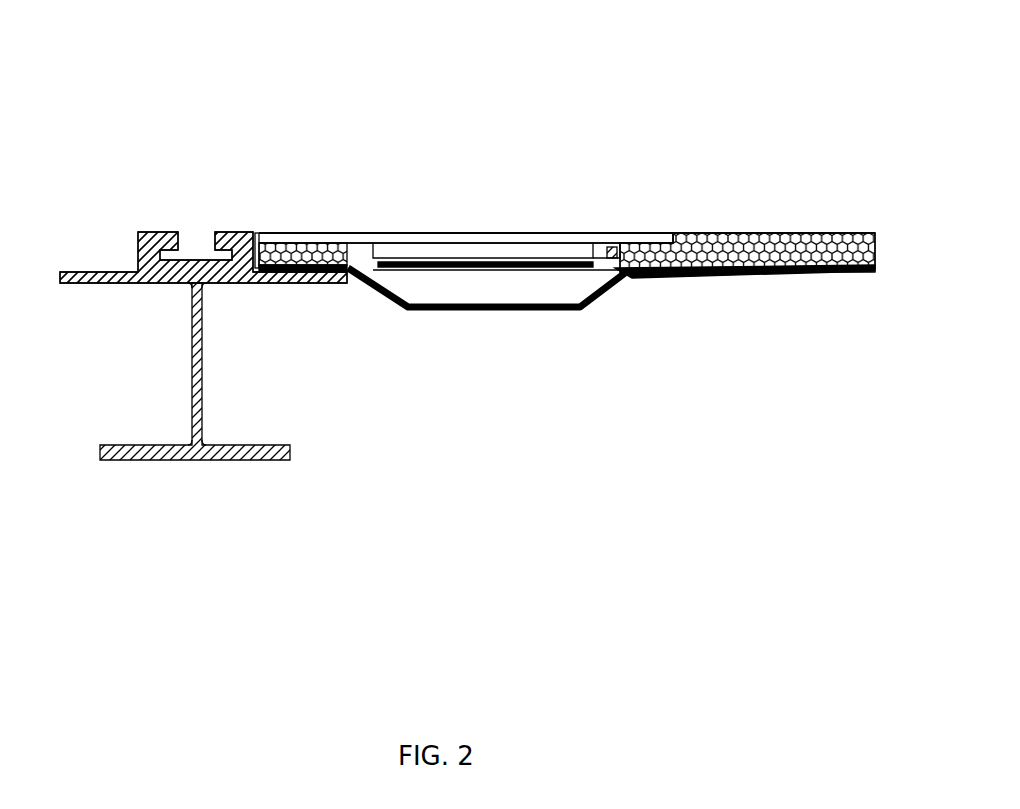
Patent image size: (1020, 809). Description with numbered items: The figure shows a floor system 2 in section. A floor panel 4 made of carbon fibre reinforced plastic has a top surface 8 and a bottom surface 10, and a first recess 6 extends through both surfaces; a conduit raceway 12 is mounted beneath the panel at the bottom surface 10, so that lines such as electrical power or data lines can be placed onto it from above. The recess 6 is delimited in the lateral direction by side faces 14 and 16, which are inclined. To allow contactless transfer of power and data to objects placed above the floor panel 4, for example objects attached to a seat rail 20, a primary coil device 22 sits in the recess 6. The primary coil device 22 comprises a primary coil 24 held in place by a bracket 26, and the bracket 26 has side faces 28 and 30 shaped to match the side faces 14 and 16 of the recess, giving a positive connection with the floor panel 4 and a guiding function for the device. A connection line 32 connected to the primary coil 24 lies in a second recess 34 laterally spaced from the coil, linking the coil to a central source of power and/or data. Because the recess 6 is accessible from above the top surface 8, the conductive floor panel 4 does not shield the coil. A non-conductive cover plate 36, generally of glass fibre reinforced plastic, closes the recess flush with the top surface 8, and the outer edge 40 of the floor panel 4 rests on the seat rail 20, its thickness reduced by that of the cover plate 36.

The floor system 2 is at (709, 111).
The floor panel 4 is at (803, 233).
The first recess 6 is at (394, 217).
The top surface 8 is at (762, 221).
The bottom surface 10 is at (840, 288).
The conduit raceway 12 is at (565, 311).
The side face 14 is at (464, 209).
The side face 16 is at (747, 201).
The seat rail 20 is at (202, 364).
The primary coil device 22 is at (575, 238).
The primary coil 24 is at (470, 237).
The bracket 26 is at (626, 279).
The side face 28 is at (348, 234).
The side face 30 is at (668, 232).
The connection line 32 is at (617, 238).
The second recess 34 is at (642, 229).
The cover plate 36 is at (362, 242).
The outer edge 40 is at (260, 229).